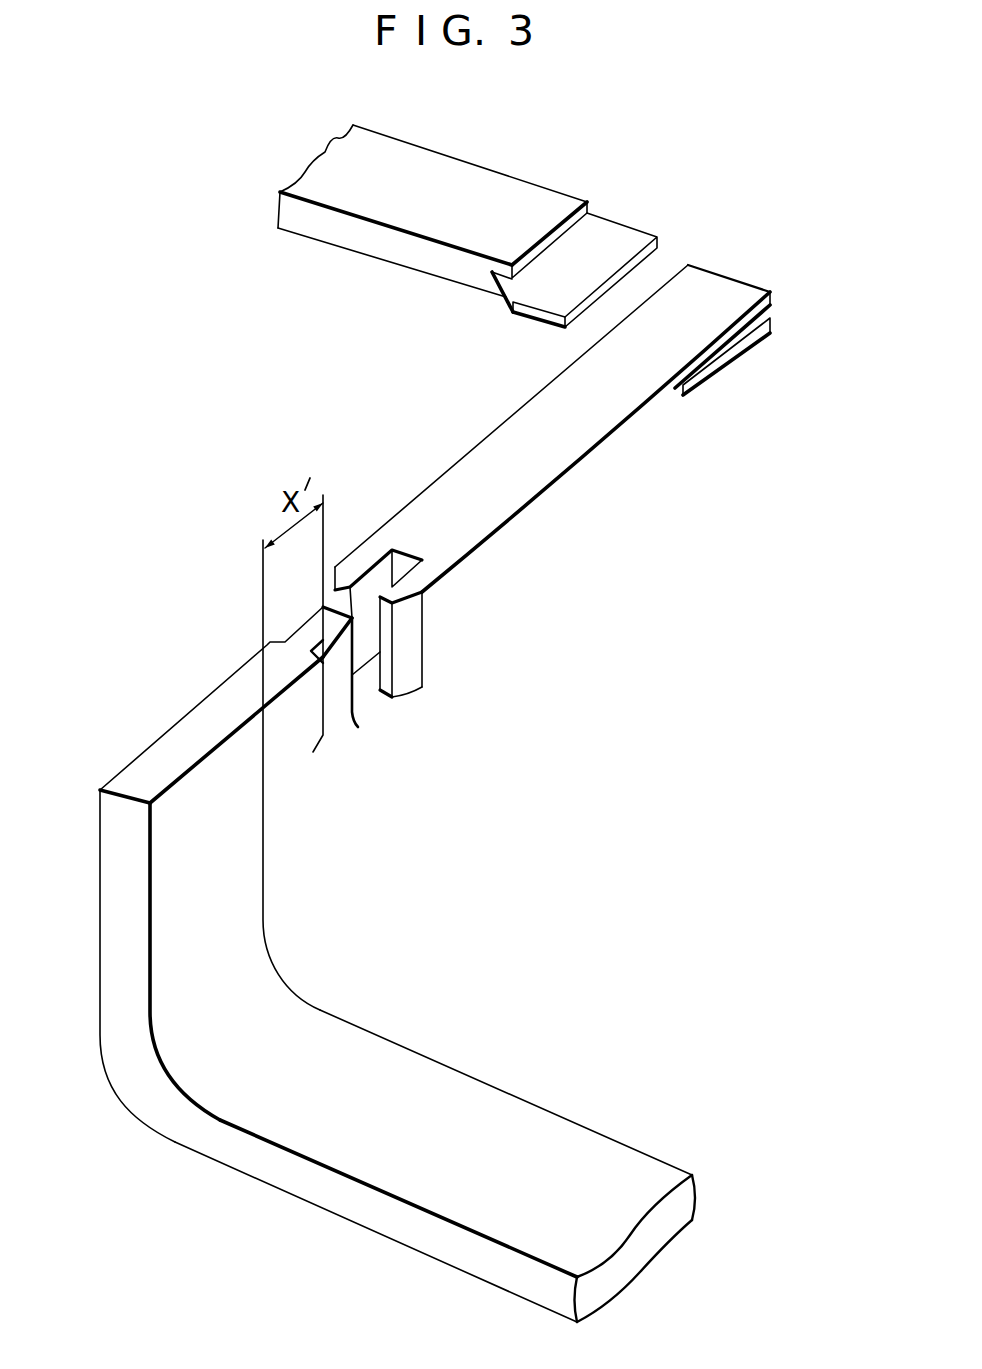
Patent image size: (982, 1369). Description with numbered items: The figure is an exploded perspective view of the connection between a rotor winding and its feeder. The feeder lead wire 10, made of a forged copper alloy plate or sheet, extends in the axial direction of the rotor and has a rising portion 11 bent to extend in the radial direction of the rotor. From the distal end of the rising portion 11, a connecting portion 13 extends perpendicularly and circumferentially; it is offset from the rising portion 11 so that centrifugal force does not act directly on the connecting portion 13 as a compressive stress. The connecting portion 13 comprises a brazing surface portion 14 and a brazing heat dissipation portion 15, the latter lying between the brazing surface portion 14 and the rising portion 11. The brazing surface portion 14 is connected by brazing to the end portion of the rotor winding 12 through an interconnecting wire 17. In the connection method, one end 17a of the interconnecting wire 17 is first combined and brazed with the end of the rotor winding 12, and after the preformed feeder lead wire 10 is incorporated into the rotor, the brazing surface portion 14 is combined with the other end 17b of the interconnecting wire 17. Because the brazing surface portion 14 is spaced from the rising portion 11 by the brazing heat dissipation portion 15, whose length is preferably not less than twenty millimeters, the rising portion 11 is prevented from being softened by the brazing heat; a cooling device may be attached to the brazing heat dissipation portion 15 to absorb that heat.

The feeder lead wire 10 is at (508, 1117).
The rising portion 11 is at (255, 943).
The rotor winding 12 is at (560, 202).
The connecting portion 13 is at (376, 663).
The brazing surface portion 14 is at (378, 675).
The brazing heat dissipation portion 15 is at (283, 762).
The interconnecting wire 17 is at (588, 472).
The one end of interconnecting wire 17a is at (733, 290).
The other end of interconnecting wire 17b is at (443, 619).